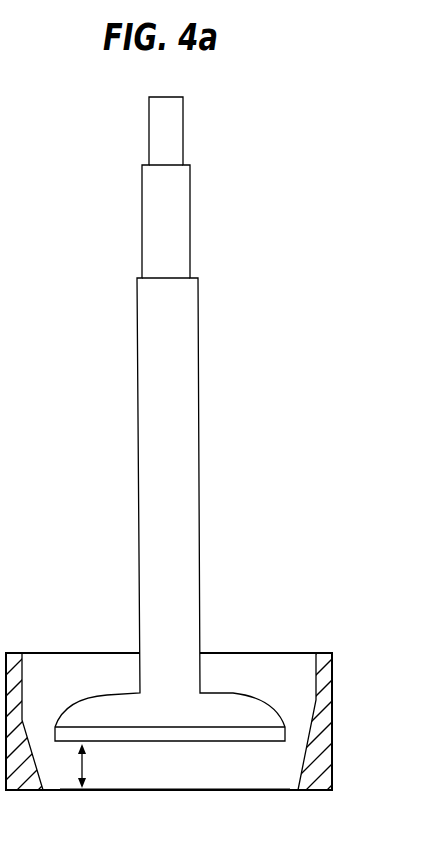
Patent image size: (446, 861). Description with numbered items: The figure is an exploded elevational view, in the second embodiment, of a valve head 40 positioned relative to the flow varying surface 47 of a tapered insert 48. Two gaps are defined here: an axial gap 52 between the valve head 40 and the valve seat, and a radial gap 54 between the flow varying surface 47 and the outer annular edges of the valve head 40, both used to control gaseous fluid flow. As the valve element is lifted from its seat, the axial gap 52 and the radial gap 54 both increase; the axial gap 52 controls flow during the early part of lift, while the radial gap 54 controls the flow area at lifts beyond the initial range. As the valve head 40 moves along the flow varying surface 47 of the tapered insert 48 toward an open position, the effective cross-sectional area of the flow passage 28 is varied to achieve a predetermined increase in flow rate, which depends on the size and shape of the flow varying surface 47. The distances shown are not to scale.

The flow passage 28 is at (193, 764).
The valve head 40 is at (92, 700).
The flow varying surface 47 is at (35, 738).
The tapered insert 48 is at (333, 694).
The axial gap 52 is at (93, 765).
The radial gap 54 is at (297, 716).